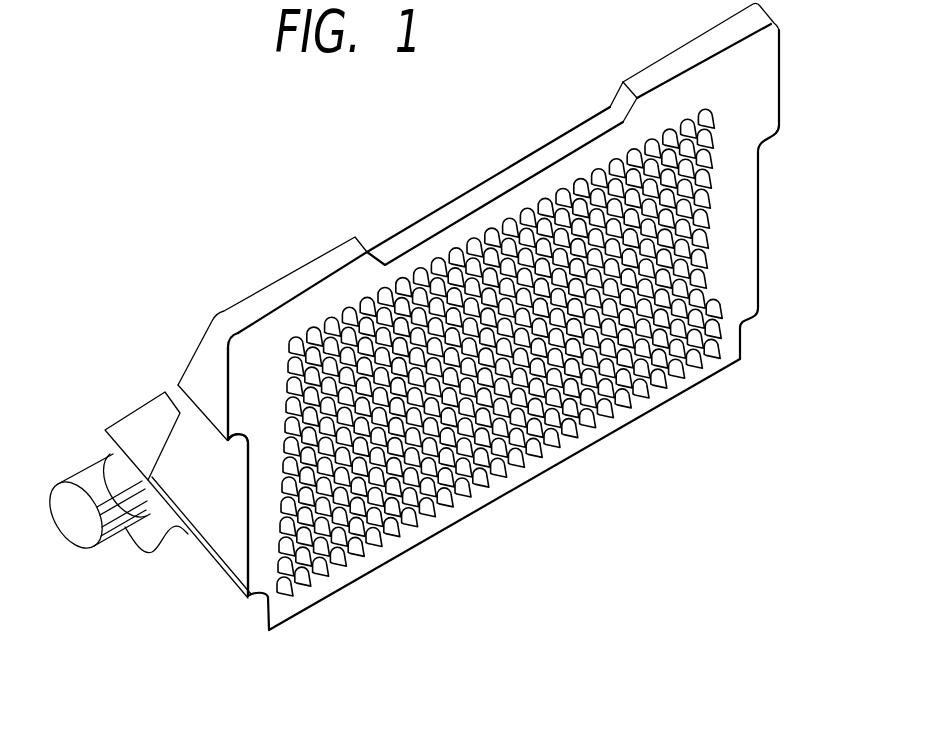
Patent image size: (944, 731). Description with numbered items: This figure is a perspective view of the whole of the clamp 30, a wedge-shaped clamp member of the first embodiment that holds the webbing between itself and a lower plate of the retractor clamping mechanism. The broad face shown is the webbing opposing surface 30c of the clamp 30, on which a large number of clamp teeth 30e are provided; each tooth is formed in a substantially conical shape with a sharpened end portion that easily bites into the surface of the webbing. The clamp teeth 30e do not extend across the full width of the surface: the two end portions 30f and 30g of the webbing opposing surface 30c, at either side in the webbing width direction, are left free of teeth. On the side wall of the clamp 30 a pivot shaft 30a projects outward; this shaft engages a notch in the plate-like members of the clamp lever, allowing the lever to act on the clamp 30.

The clamp 30 is at (210, 315).
The pivot shaft 30a is at (83, 515).
The webbing opposing surface 30c is at (742, 100).
The clamp teeth 30e is at (448, 530).
The end portion 30f is at (261, 410).
The end portion 30g is at (746, 240).